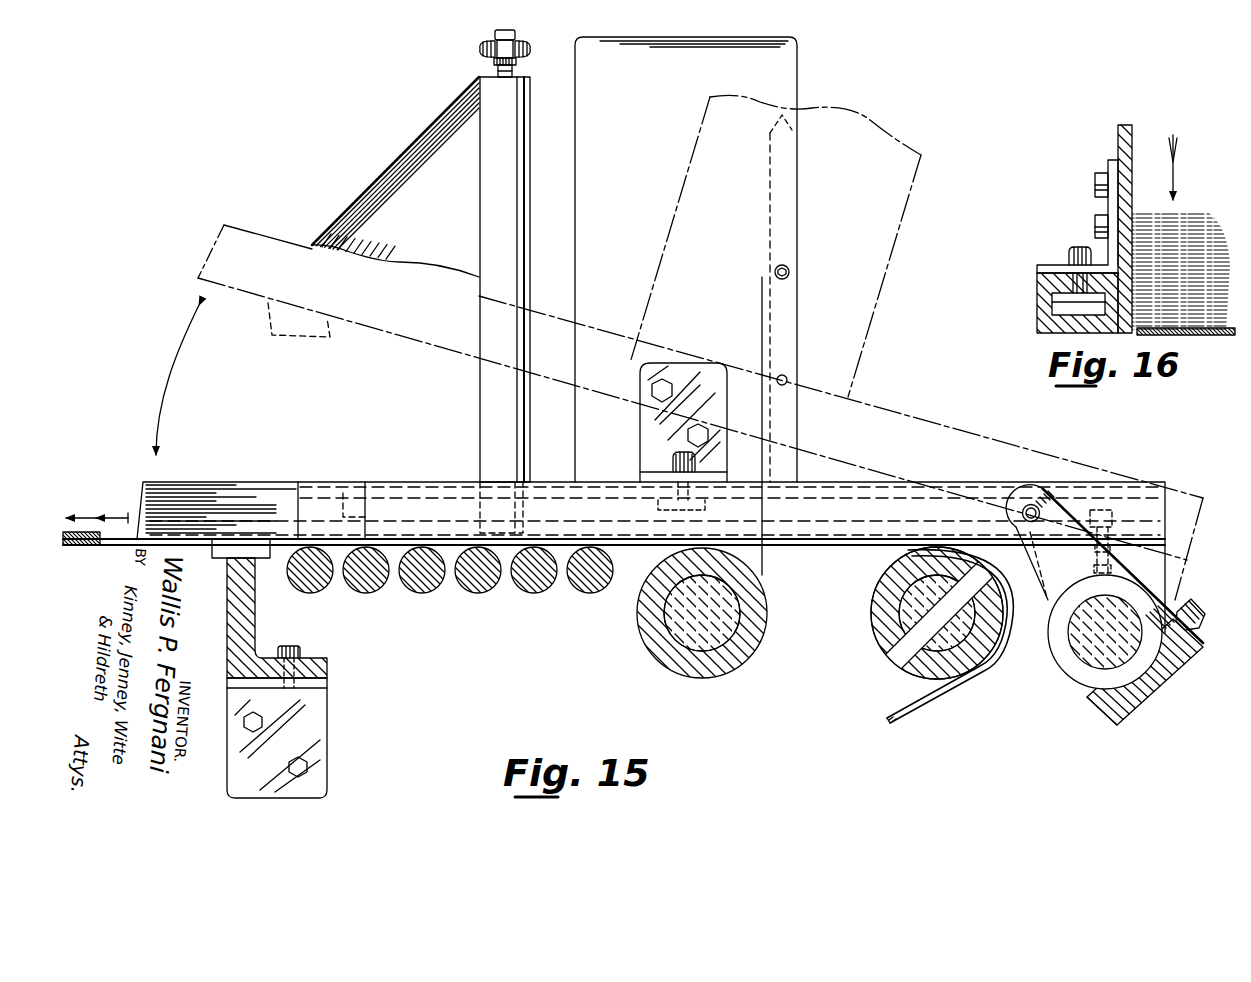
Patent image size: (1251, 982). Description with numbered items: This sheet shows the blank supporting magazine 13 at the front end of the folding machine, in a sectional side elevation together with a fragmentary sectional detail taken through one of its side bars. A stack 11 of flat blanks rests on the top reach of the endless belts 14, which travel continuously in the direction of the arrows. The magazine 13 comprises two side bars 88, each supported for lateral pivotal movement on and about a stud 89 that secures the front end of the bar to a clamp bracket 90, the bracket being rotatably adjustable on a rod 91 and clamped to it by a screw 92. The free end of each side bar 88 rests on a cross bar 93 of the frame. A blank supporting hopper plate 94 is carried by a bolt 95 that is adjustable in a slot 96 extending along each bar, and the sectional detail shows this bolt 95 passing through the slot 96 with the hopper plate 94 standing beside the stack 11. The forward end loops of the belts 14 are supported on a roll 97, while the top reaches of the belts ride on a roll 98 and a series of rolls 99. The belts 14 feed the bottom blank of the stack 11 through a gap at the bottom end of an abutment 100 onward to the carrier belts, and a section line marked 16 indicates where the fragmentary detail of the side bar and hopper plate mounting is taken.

In FIG. 16, the stack 11 is at (1186, 229).
In FIG. 15, the magazine 13 is at (326, 155).
In FIG. 15, the endless belts 14 is at (923, 704).
In FIG. 16, the endless belts 14 is at (1217, 338).
In FIG. 15, the folding belt 16 is at (764, 305).
In FIG. 15, the side bar 88 is at (228, 486).
In FIG. 15, the stud 89 is at (1114, 528).
In FIG. 15, the clamp bracket 90 is at (1135, 711).
In FIG. 15, the rod 91 is at (1096, 653).
In FIG. 15, the screw 92 is at (1194, 611).
In FIG. 15, the cross bar 93 is at (255, 612).
In FIG. 15, the hopper plate 94 is at (592, 146).
In FIG. 16, the hopper plate 94 is at (1126, 135).
In FIG. 15, the bolt 95 is at (667, 463).
In FIG. 16, the bolt 95 is at (1075, 262).
In FIG. 16, the slot 96 is at (1070, 311).
In FIG. 15, the roll 97 is at (897, 643).
In FIG. 15, the roll 98 is at (735, 655).
In FIG. 15, the rolls 99 is at (584, 585).
In FIG. 15, the abutment 100 is at (512, 258).